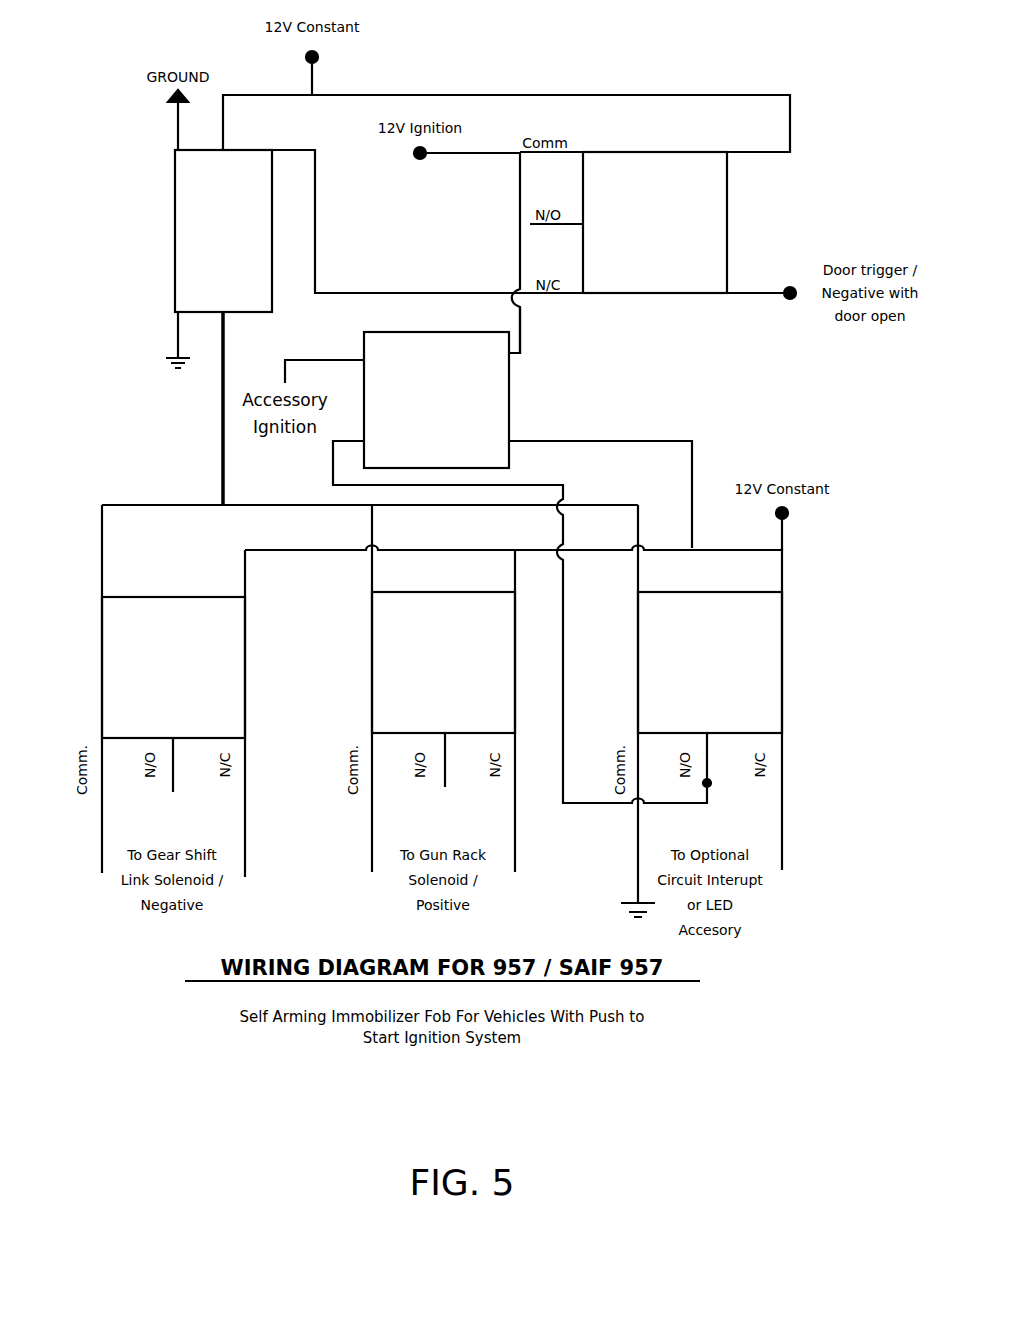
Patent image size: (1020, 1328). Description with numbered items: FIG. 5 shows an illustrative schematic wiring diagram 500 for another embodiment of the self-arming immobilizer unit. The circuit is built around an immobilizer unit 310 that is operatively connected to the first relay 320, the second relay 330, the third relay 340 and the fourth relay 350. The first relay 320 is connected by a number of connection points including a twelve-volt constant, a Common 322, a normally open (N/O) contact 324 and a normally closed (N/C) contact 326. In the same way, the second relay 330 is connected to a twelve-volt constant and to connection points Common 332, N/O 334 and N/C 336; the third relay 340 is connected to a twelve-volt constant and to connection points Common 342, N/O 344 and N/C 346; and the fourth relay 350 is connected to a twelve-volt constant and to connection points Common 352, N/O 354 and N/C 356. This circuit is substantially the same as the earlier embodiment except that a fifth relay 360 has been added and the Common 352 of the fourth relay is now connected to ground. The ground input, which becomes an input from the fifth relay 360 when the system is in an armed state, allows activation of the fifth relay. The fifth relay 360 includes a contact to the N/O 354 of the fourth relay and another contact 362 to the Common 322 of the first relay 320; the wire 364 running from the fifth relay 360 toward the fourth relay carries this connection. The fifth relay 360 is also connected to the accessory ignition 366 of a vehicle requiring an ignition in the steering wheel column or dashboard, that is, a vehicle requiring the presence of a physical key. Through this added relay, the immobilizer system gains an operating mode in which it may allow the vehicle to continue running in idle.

The immobilizer unit 310 is at (173, 272).
The relay no. 1 320 is at (730, 238).
The Common 322 is at (490, 156).
The normally open (N/O) contact 324 is at (520, 238).
The normally closed (N/C) contact 326 is at (576, 296).
The relay no. 2 330 is at (247, 697).
The Common 332 is at (102, 835).
The N/O 334 is at (176, 780).
The N/C 336 is at (247, 835).
The relay no. 3 340 is at (517, 705).
The Common 342 is at (372, 815).
The N/O 344 is at (447, 765).
The N/C 346 is at (518, 813).
The relay no. 4 350 is at (785, 710).
The Common 352 is at (640, 808).
The N/O 354 is at (712, 765).
The N/C 356 is at (785, 810).
The relay no. 5 360 is at (511, 370).
The contact 362 is at (525, 322).
The output wire from relay no. 5 to relay no. 4 normally open terminal 364 is at (540, 485).
The accessory ignition 366 is at (335, 358).
The wiring diagram 500 is at (678, 1103).